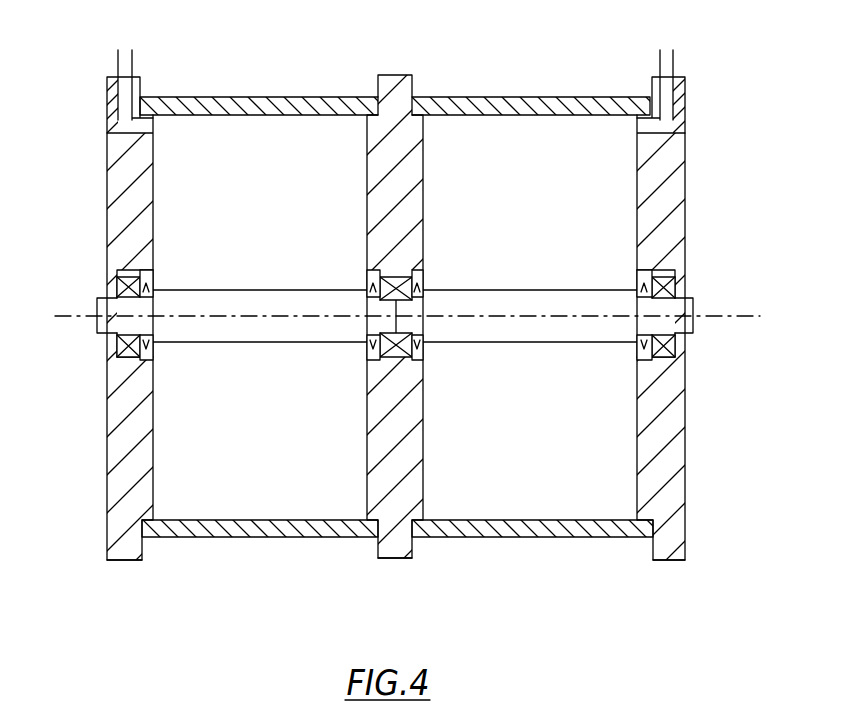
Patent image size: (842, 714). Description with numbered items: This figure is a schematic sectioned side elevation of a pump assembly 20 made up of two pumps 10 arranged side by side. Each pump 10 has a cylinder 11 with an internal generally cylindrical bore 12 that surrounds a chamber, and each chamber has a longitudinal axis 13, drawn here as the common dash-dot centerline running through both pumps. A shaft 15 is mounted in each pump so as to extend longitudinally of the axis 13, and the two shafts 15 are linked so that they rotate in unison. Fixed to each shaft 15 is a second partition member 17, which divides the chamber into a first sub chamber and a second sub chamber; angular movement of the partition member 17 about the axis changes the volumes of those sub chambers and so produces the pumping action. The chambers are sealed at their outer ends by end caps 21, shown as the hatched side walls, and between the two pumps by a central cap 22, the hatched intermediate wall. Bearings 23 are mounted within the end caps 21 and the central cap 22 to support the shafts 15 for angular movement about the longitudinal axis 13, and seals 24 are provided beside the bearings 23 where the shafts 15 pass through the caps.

The pump 10 is at (225, 552).
The cylinder 11 is at (283, 103).
The internal generally cylindrical bore 12 is at (233, 115).
The longitudinal axis 13 is at (730, 325).
The shaft 15 is at (224, 342).
The second partition member 17 is at (232, 486).
The pump assembly 20 is at (133, 128).
The end caps 21 is at (122, 186).
The central cap 22 is at (413, 150).
The bearings 23 is at (127, 360).
The seals 24 is at (150, 277).